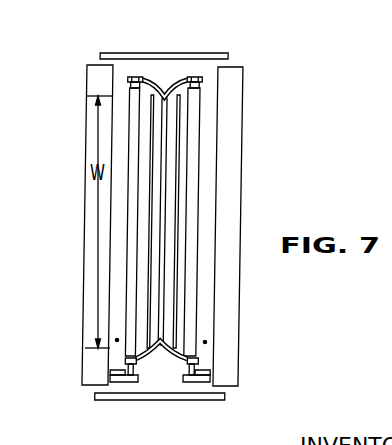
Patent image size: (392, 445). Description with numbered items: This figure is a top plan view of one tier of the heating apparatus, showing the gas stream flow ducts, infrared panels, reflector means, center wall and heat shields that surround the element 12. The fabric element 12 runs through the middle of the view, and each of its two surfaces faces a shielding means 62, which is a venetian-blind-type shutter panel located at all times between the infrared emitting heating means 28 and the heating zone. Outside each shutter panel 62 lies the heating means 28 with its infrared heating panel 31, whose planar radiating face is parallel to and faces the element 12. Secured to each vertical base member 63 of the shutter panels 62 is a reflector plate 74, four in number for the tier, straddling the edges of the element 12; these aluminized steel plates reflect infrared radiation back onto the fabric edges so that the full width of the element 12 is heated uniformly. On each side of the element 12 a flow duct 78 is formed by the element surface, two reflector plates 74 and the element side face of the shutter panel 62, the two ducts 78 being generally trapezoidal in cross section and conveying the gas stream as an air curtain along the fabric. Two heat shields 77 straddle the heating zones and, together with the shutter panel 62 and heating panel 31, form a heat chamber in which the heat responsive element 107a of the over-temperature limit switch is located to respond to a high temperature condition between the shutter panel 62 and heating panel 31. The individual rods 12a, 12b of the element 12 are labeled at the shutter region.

The heat shield 77 is at (113, 52).
The vertical base member 63 is at (138, 78).
The reflector plate 74 is at (148, 90).
The flow duct 78 is at (195, 101).
The first rod 12a is at (152, 140).
The second rod 12b is at (188, 153).
The element 12 is at (230, 220).
The heating means 28 is at (162, 225).
The infrared heating panel 31 is at (228, 175).
The shielding means 62 is at (130, 242).
The heat responsive element 107a is at (117, 340).